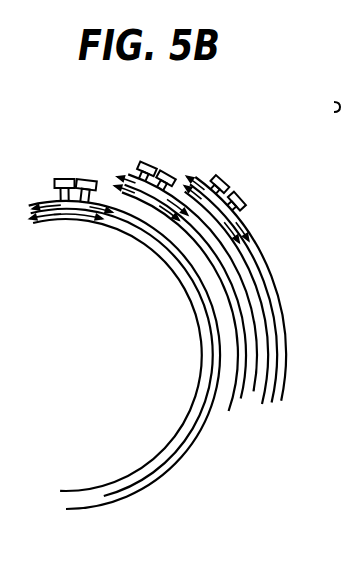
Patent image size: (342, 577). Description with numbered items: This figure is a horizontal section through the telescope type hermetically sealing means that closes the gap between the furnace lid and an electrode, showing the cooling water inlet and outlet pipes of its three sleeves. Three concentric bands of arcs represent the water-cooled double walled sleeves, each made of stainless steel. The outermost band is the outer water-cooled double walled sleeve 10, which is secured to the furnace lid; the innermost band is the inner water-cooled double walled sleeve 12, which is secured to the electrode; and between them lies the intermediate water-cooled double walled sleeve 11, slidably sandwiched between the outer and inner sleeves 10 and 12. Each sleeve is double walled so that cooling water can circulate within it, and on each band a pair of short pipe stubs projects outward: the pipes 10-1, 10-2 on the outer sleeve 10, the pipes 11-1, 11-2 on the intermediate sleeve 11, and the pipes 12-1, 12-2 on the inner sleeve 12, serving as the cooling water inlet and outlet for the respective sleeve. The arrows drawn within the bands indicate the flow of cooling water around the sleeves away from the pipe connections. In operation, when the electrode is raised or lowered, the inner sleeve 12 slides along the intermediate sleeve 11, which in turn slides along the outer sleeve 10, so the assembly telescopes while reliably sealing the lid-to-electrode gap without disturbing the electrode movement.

The outer water-cooled double walled sleeve 10 is at (287, 362).
The terminal pin of track 10 10-1 is at (242, 172).
The terminal pin of track 10 10-2 is at (272, 180).
The intermediate water-cooled double walled sleeve 11 is at (247, 393).
The terminal pin of track 11 11-1 is at (152, 153).
The terminal pin of track 11 11-2 is at (181, 158).
The inner water-cooled double walled sleeve 12 is at (184, 457).
The terminal pin of track 12 12-1 is at (42, 174).
The terminal pin of track 12 12-2 is at (91, 175).